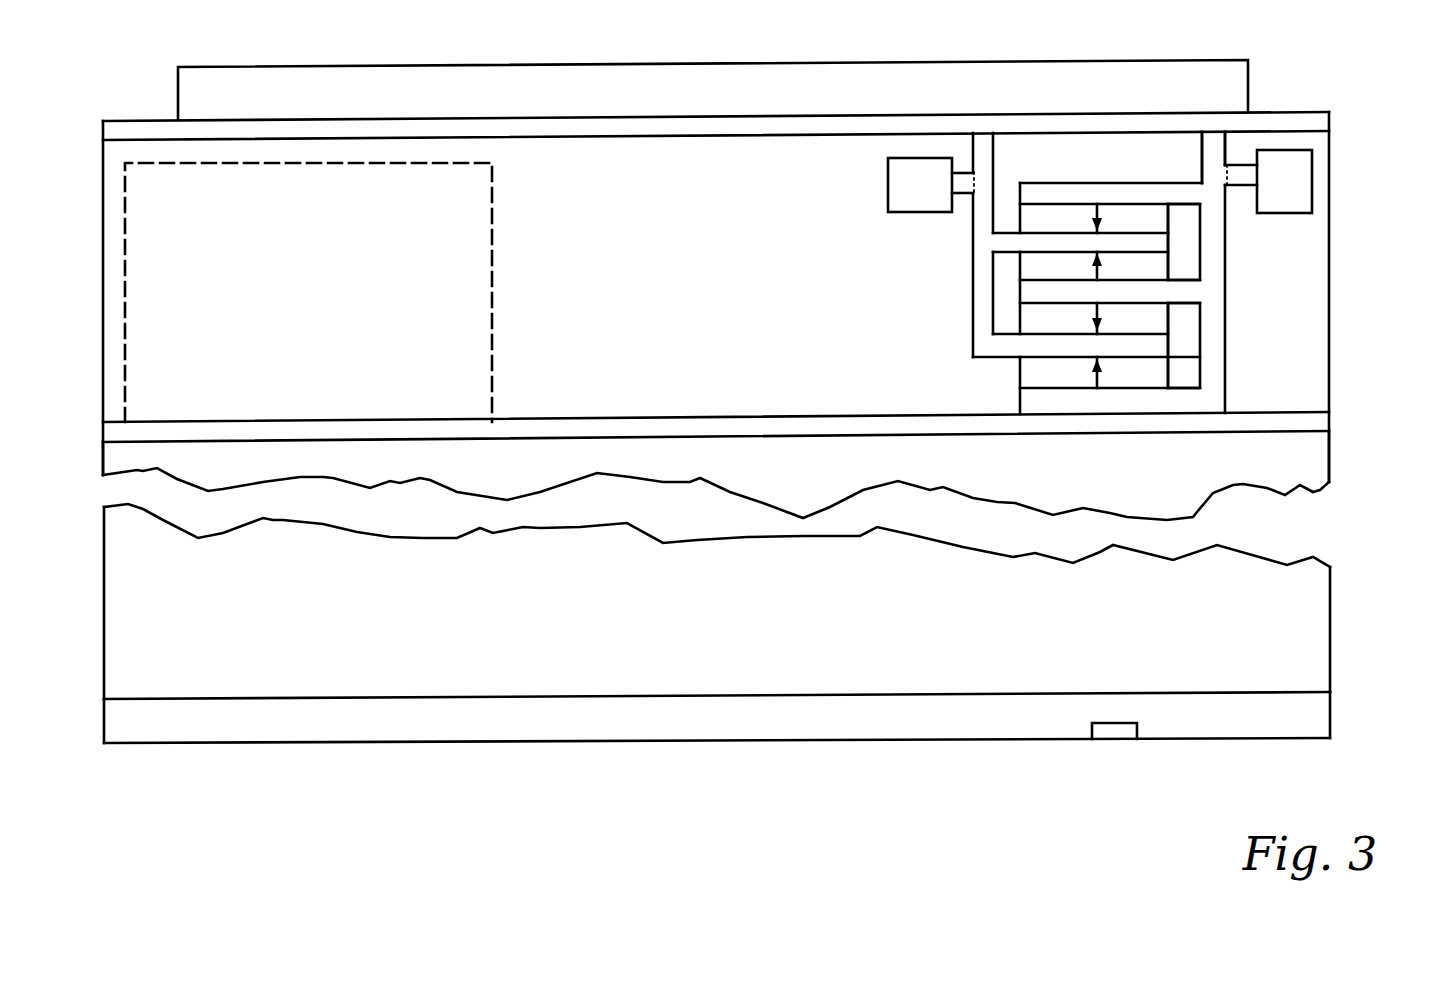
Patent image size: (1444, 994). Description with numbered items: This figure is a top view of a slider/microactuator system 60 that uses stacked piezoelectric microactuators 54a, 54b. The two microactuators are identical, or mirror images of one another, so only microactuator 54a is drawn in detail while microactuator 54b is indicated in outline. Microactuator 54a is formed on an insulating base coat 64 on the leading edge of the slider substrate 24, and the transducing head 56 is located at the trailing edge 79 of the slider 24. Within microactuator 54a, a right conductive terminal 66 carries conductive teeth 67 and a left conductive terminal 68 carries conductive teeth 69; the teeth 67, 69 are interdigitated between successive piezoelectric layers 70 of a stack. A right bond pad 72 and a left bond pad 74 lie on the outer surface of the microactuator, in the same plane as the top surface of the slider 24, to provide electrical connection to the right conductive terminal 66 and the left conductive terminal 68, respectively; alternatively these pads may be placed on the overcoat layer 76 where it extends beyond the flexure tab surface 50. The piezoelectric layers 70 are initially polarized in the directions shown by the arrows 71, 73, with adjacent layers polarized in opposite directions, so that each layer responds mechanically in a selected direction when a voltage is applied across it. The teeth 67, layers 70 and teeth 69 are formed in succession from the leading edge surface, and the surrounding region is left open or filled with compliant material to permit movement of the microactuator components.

The slider substrate 24 is at (1278, 458).
The flexure tab surface 50 is at (803, 62).
The stacked piezoelectric microactuator 54a is at (1288, 262).
The stacked piezoelectric microactuator 54b is at (493, 222).
The transducing head 56 is at (1117, 742).
The slider/microactuator system 60 is at (1358, 450).
The insulating base coat 64 is at (1313, 420).
The right conductive terminal 66 is at (1227, 329).
The conductive teeth 67 is at (1126, 191).
The left conductive terminal 68 is at (985, 275).
The conductive teeth 69 is at (1003, 233).
The piezoelectric layers 70 is at (1158, 229).
The polarization direction arrow 71 is at (1092, 212).
The right bond pad 72 is at (1312, 190).
The polarization direction arrow 73 is at (1092, 268).
The left bond pad 74 is at (887, 182).
The overcoat layer 76 is at (1289, 118).
The trailing edge 79 is at (993, 740).